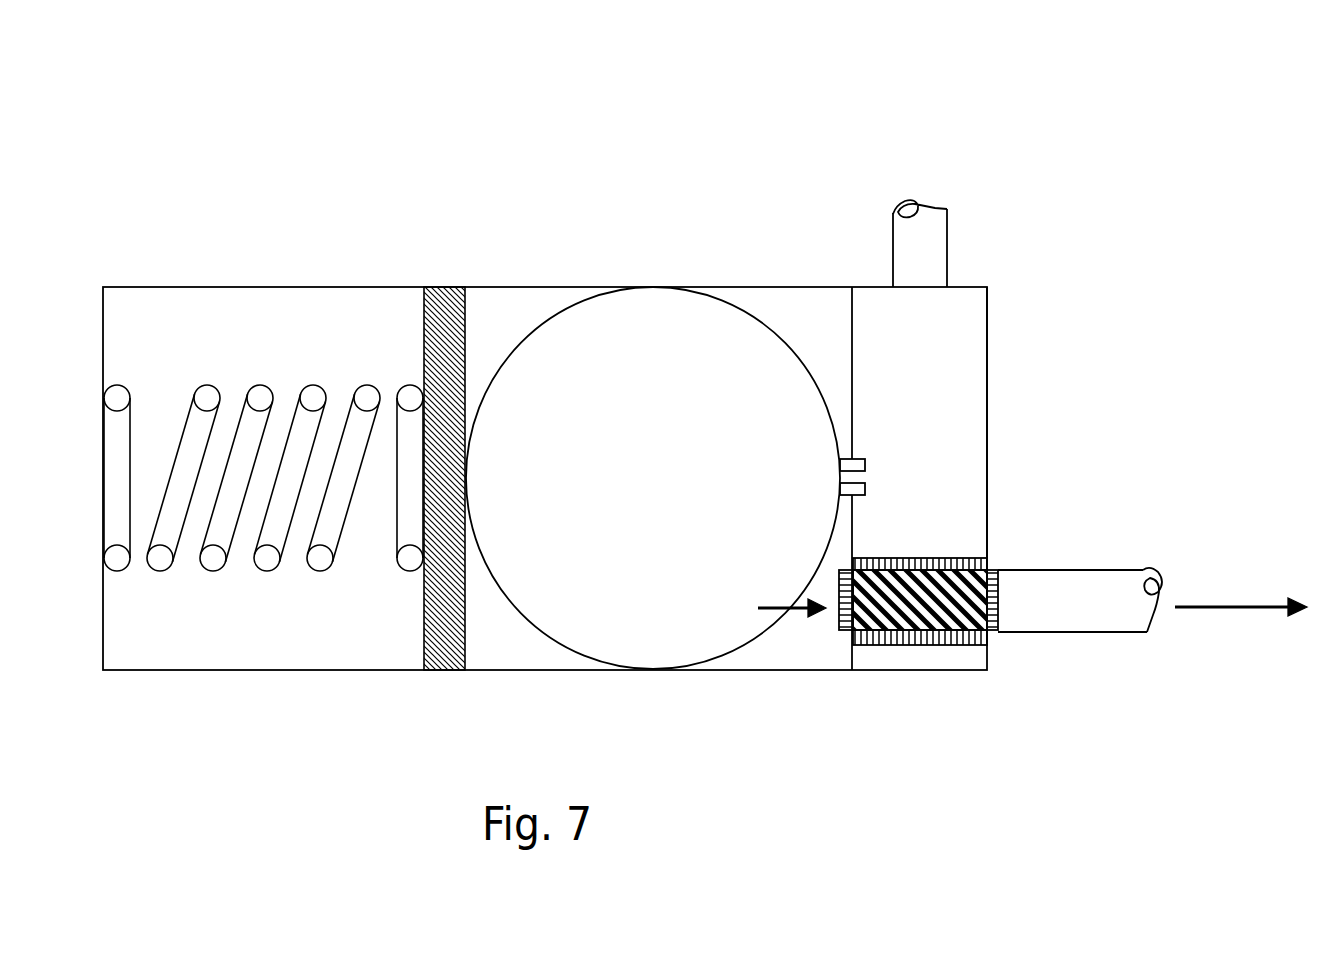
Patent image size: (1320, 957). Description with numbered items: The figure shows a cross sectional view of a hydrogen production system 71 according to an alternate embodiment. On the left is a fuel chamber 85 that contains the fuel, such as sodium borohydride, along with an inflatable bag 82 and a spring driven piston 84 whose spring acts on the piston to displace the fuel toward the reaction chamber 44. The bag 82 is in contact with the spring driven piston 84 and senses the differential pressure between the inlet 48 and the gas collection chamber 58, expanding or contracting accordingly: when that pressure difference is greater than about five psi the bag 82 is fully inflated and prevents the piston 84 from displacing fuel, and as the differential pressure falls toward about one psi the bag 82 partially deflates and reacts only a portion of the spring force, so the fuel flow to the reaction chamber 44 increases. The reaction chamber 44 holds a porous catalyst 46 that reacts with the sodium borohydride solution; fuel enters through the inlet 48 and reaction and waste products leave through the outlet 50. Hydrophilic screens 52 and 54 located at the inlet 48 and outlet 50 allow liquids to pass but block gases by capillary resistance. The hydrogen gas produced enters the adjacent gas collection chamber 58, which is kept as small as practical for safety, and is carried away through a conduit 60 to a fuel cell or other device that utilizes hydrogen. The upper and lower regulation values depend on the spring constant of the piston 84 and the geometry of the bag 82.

The hydrogen production system 71 is at (200, 248).
The spring driven piston 84 is at (440, 293).
The inflatable bag 82 is at (665, 310).
The fuel chamber 85 is at (785, 310).
The conduit 60 is at (920, 223).
The gas collection chamber 58 is at (946, 422).
The reaction chamber 44 is at (915, 642).
The hydrophilic screen 54 is at (1000, 573).
The hydrophilic screen 52 is at (845, 622).
The inlet 48 is at (838, 600).
The porous catalyst 46 is at (987, 630).
The outlet 50 is at (1108, 607).